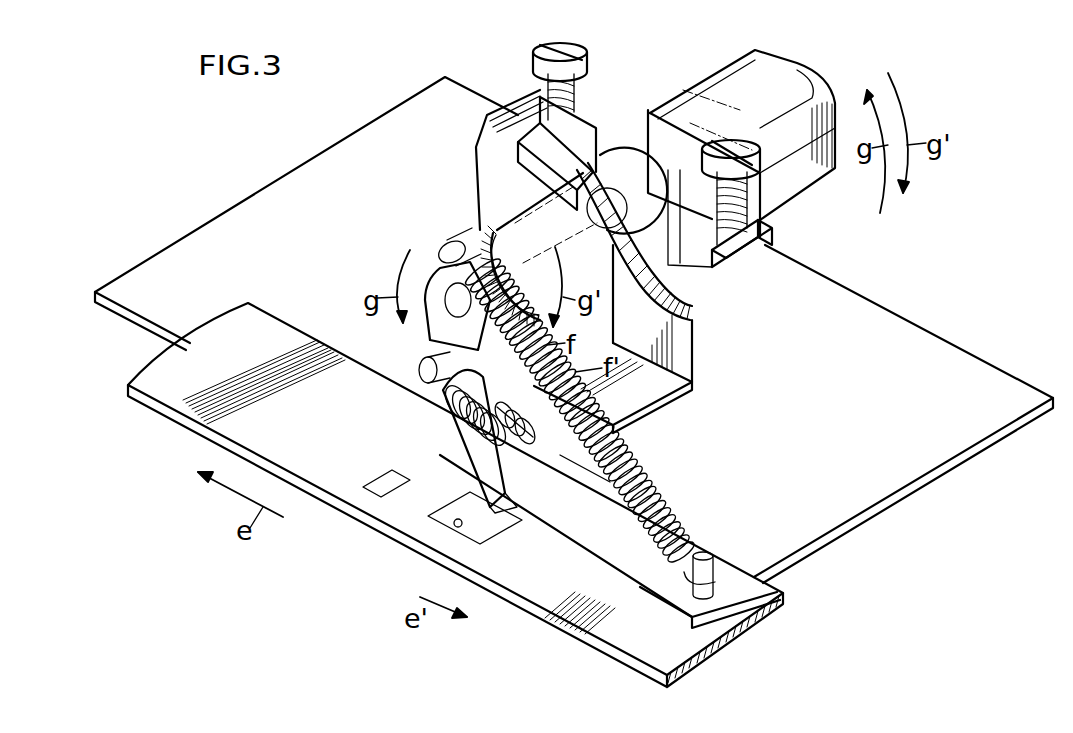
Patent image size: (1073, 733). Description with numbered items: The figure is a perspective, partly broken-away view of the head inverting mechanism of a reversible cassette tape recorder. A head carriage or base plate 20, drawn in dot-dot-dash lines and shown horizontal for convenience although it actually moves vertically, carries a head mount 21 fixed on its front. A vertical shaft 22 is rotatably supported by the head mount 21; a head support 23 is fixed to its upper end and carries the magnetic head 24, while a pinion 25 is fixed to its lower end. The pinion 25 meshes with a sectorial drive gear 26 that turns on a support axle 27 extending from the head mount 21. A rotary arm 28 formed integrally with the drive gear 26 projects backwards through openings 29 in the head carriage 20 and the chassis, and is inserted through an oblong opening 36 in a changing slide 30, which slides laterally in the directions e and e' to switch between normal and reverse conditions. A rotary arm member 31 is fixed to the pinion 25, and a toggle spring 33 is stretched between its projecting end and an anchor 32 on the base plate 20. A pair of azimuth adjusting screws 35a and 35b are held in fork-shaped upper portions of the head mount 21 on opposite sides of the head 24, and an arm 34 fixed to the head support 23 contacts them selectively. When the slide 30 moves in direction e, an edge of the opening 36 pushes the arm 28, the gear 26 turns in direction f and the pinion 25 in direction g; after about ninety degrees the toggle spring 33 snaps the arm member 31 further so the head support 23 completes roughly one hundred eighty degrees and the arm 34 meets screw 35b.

The head carriage 20 is at (812, 548).
The head mount 21 is at (627, 387).
The vertical shaft 22 is at (584, 236).
The head support 23 is at (693, 218).
The magnetic head 24 is at (812, 83).
The pinion 25 is at (512, 243).
The sectorial drive gear 26 is at (440, 340).
The support axle 27 is at (450, 410).
The rotary arm 28 is at (480, 463).
The openings 29 is at (610, 470).
The changing slide 30 is at (628, 627).
The rotary arm member 31 is at (477, 225).
The anchor 32 is at (712, 552).
The toggle spring 33 is at (677, 528).
The arm 34 is at (587, 147).
The azimuth adjusting screw 35a is at (567, 53).
The azimuth adjusting screw 35b is at (757, 163).
The oblong opening 36 is at (463, 527).